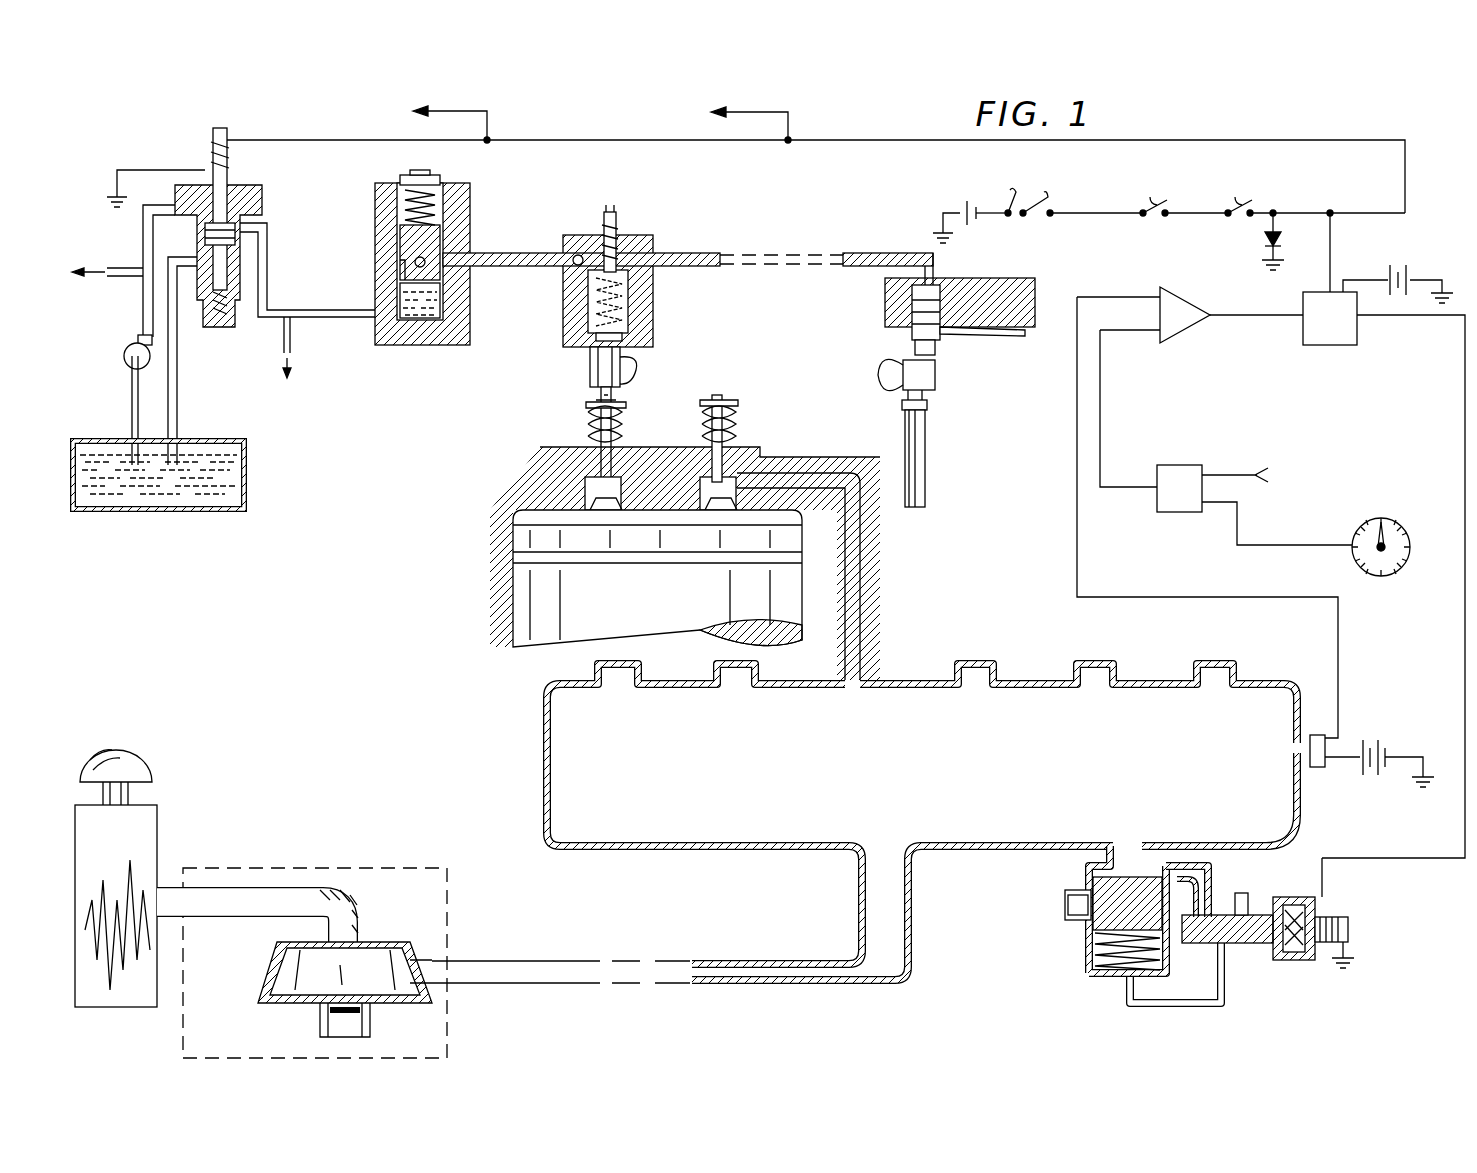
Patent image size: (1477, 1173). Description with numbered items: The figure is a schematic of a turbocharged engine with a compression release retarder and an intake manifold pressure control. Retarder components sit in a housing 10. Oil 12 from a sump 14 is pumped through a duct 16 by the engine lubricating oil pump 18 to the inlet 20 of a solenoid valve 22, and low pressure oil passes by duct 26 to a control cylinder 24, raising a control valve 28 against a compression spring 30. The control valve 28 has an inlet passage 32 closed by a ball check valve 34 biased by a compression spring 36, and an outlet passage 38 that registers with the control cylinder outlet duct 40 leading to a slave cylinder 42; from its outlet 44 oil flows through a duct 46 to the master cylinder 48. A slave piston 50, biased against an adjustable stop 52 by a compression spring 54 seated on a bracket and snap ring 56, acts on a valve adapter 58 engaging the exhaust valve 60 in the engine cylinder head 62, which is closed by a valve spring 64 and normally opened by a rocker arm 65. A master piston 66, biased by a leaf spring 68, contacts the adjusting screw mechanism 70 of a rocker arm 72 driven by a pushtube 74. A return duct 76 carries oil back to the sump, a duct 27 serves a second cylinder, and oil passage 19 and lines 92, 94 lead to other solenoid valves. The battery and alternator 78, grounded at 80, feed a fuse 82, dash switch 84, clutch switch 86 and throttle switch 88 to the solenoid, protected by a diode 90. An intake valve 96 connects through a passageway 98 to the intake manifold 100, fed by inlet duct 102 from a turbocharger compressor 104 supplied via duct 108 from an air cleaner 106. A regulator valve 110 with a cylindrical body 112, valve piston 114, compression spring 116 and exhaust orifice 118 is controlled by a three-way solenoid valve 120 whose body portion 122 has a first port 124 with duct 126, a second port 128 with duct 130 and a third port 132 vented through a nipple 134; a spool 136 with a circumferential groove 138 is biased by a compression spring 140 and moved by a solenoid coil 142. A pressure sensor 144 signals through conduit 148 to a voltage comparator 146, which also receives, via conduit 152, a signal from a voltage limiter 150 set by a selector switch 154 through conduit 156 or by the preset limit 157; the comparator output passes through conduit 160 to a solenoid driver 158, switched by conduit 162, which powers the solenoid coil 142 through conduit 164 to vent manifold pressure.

The housing 10 is at (262, 195).
The oil 12 is at (205, 492).
The sump 14 is at (247, 462).
The duct 16 is at (130, 420).
The engine lubricating oil pump 18 is at (125, 352).
The oil passage 19 is at (115, 266).
The inlet 20 is at (205, 226).
The solenoid valve 22 is at (200, 154).
The control cylinder 24 is at (397, 297).
The duct 26 is at (316, 320).
The duct 27 is at (282, 343).
The control valve 28 is at (397, 250).
The compression spring 30 is at (397, 215).
The inlet passage 32 is at (425, 298).
The ball check valve 34 is at (430, 270).
The compression spring 36 is at (445, 228).
The outlet passage 38 is at (448, 252).
The control cylinder outlet duct 40 is at (540, 252).
The slave cylinder 42 is at (573, 266).
The outlet 44 is at (660, 252).
The duct 46 is at (700, 258).
The master cylinder 48 is at (912, 297).
The slave piston 50 is at (655, 290).
The adjustable stop 52 is at (620, 218).
The compression spring 54 is at (640, 322).
The bracket and snap ring 56 is at (635, 338).
The valve adapter 58 is at (590, 384).
The exhaust valve 60 is at (600, 512).
The engine cylinder head 62 is at (520, 470).
The valve spring 64 is at (586, 416).
The rocker arm 65 is at (638, 372).
The master piston 66 is at (912, 335).
The leaf spring 68 is at (975, 335).
The adjusting screw mechanism 70 is at (938, 368).
The rocker arm 72 is at (930, 405).
The pushtube 74 is at (925, 457).
The return duct 76 is at (178, 400).
The vehicle battery and alternator 78 is at (972, 198).
The ground 80 is at (115, 200).
The fuse 82 is at (1013, 190).
The dash switch 84 is at (1050, 194).
The clutch switch 86 is at (1184, 191).
The throttle or fuel control switch 88 is at (1315, 191).
The diode 90 is at (1262, 238).
The line 92 is at (816, 156).
The line 94 is at (735, 120).
The intake valve 96 is at (718, 512).
The passageway 98 is at (862, 540).
The intake manifold 100 is at (884, 772).
The inlet duct 102 is at (858, 895).
The turbocharger compressor 104 is at (390, 944).
The air cleaner 106 is at (160, 820).
The duct 108 is at (242, 868).
The regulator valve 110 is at (1072, 1003).
The cylindrical body 112 is at (1090, 945).
The valve piston 114 is at (1085, 925).
The compression spring 116 is at (1090, 965).
The exhaust orifice 118 is at (1065, 897).
The three-way solenoid valve 120 is at (1300, 1010).
The body portion 122 is at (1282, 962).
The first port 124 is at (1205, 900).
The duct 126 is at (1135, 860).
The second port 128 is at (1222, 950).
The duct 130 is at (1163, 1004).
The third port 132 is at (1250, 905).
The nipple 134 is at (1300, 875).
The spool 136 is at (1240, 945).
The circumferential groove 138 is at (1241, 893).
The compression spring 140 is at (1325, 972).
The solenoid coil 142 is at (1338, 918).
The pressure sensor 144 is at (1318, 770).
The voltage comparator 146 is at (1177, 343).
The conduit 148 is at (1075, 555).
The voltage limiter 150 is at (1185, 465).
The conduit 152 is at (1102, 410).
The multi-position selector switch 154 is at (1390, 520).
The conduit 156 is at (1295, 543).
The preset limit 157 is at (1240, 470).
The solenoid driver 158 is at (1342, 347).
The conduit 160 is at (1243, 318).
The conduit 162 is at (1333, 247).
The conduit 164 is at (1465, 458).